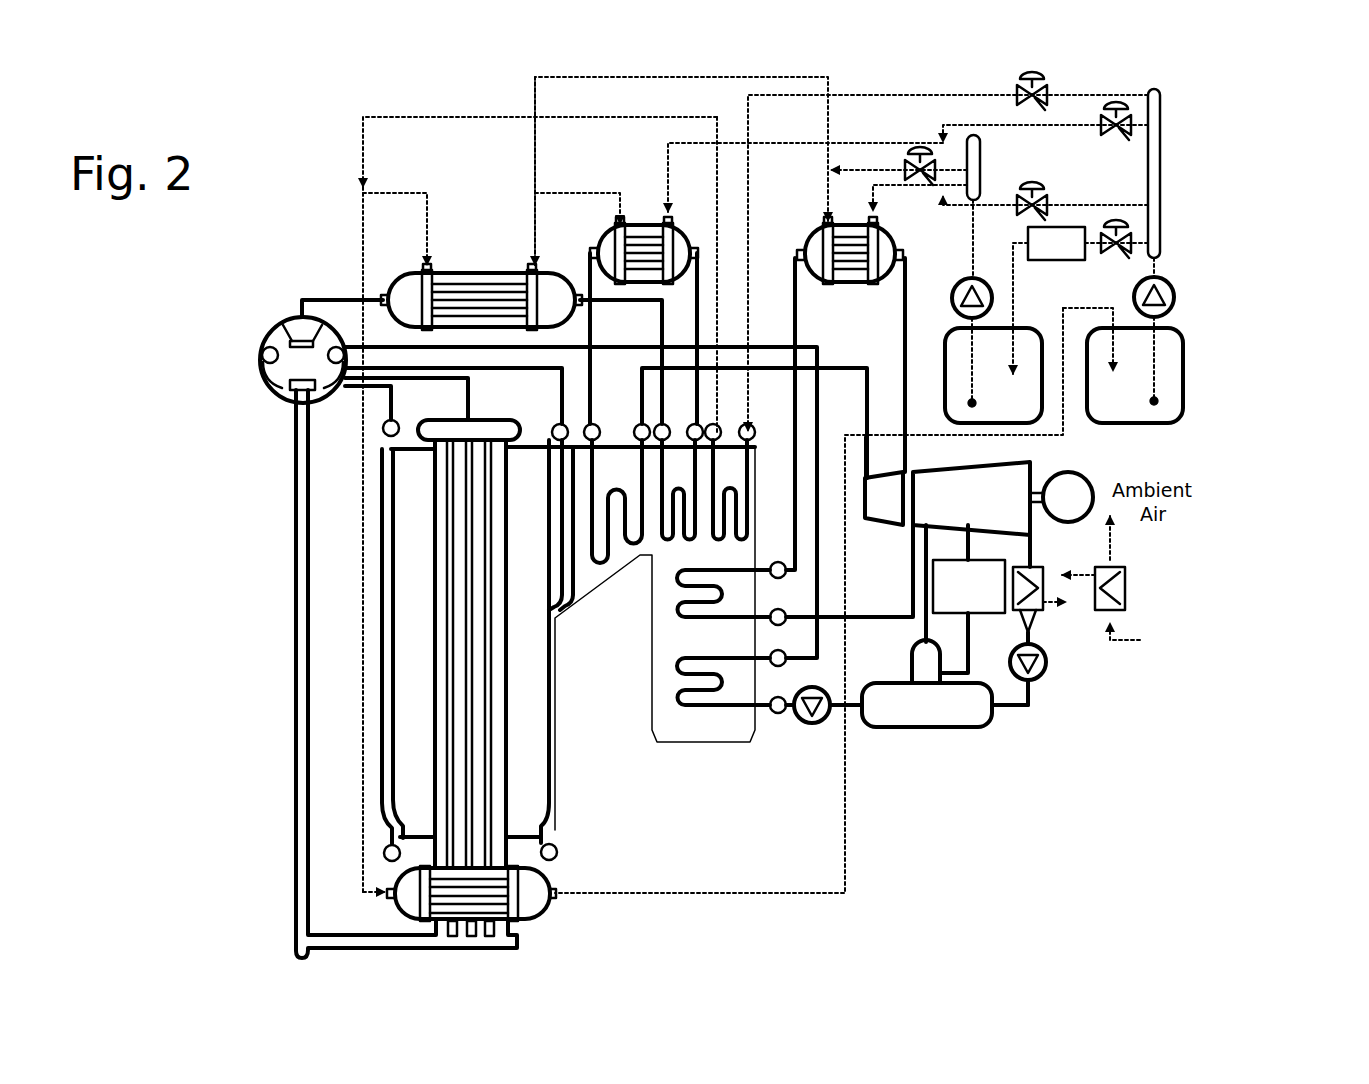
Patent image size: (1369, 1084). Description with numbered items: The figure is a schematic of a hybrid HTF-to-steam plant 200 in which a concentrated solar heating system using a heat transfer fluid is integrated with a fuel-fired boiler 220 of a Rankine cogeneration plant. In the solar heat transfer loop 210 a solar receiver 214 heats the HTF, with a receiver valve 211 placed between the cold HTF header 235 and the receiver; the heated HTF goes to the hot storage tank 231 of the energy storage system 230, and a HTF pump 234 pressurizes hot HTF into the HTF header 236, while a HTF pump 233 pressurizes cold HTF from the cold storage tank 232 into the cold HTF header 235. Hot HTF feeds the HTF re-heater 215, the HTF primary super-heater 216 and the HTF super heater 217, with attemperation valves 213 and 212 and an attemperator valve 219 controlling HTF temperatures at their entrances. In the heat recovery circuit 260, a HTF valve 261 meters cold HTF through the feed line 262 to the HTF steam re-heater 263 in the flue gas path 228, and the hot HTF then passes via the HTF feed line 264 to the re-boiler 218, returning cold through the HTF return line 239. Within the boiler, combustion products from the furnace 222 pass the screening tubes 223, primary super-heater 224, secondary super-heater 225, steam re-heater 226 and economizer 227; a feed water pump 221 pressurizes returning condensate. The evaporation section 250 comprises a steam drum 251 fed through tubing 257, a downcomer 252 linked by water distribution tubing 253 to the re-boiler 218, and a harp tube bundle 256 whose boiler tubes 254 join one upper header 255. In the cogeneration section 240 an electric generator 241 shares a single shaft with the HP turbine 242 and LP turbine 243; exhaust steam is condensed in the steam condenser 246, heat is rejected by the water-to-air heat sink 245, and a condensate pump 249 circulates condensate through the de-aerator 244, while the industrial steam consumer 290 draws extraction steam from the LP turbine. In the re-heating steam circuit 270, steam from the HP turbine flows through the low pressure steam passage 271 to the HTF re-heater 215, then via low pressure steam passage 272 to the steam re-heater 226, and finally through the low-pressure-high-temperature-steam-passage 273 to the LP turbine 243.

The hybrid HTF-to-steam plant 200 is at (1212, 168).
The solar heat transfer loop 210 is at (478, 100).
The receiver valve 211 is at (1116, 254).
The attemperation valve 212 is at (908, 157).
The attemperation valve 213 is at (1040, 188).
The solar receiver 214 is at (1049, 300).
The HTF re-heater 215 is at (812, 228).
The HTF primary super-heater 216 is at (608, 245).
The HTF super heater 217 is at (410, 272).
The re-boiler 218 is at (540, 910).
The attemperator valve 219 is at (912, 155).
The fuel-fired boiler 220 is at (642, 772).
The feed water pump 221 is at (808, 714).
The furnace 222 is at (514, 756).
The screening tubes 223 is at (553, 420).
The primary super-heater 224 is at (617, 486).
The secondary super-heater 225 is at (679, 486).
The steam re-heater 226 is at (680, 620).
The economizer 227 is at (680, 698).
The flue gas path 228 is at (543, 556).
The energy storage system 230 is at (1212, 245).
The hot storage tank 231 is at (993, 375).
The cold storage tank 232 is at (1123, 365).
The HTF pump 233 is at (1165, 292).
The HTF pump 234 is at (962, 288).
The cold HTF header 235 is at (1155, 150).
The HTF header 236 is at (975, 162).
The HTF return line 239 is at (848, 803).
The cogeneration section 240 is at (1180, 553).
The electric generator 241 is at (1085, 490).
The HP turbine 242 is at (884, 498).
The LP turbine 243 is at (978, 552).
The de-aerator 244 is at (945, 683).
The water-to-air heat sink 245 is at (1118, 592).
The steam condenser 246 is at (1035, 572).
The condensate pump 249 is at (1045, 672).
The evaporation section 250 is at (272, 777).
The steam drum 251 is at (270, 325).
The downcomer 252 is at (294, 583).
The water distribution tubing 253 is at (374, 936).
The boiler tubes 254 is at (441, 733).
The upper header 255 is at (478, 428).
The harp tube bundle 256 is at (430, 578).
The tubing 257 is at (425, 380).
The heat recovery circuit 260 is at (848, 88).
The HTF valve 261 is at (1045, 92).
The feed line 262 is at (948, 98).
The HTF steam re-heater 263 is at (730, 488).
The HTF feed line 264 is at (660, 116).
The re-heating steam circuit 270 is at (833, 352).
The low pressure steam passage 271 is at (905, 360).
The low pressure steam passage 272 is at (795, 305).
The low-pressure-high-temperature-steam-passage 273 is at (878, 612).
The industrial steam consumer 290 is at (969, 616).